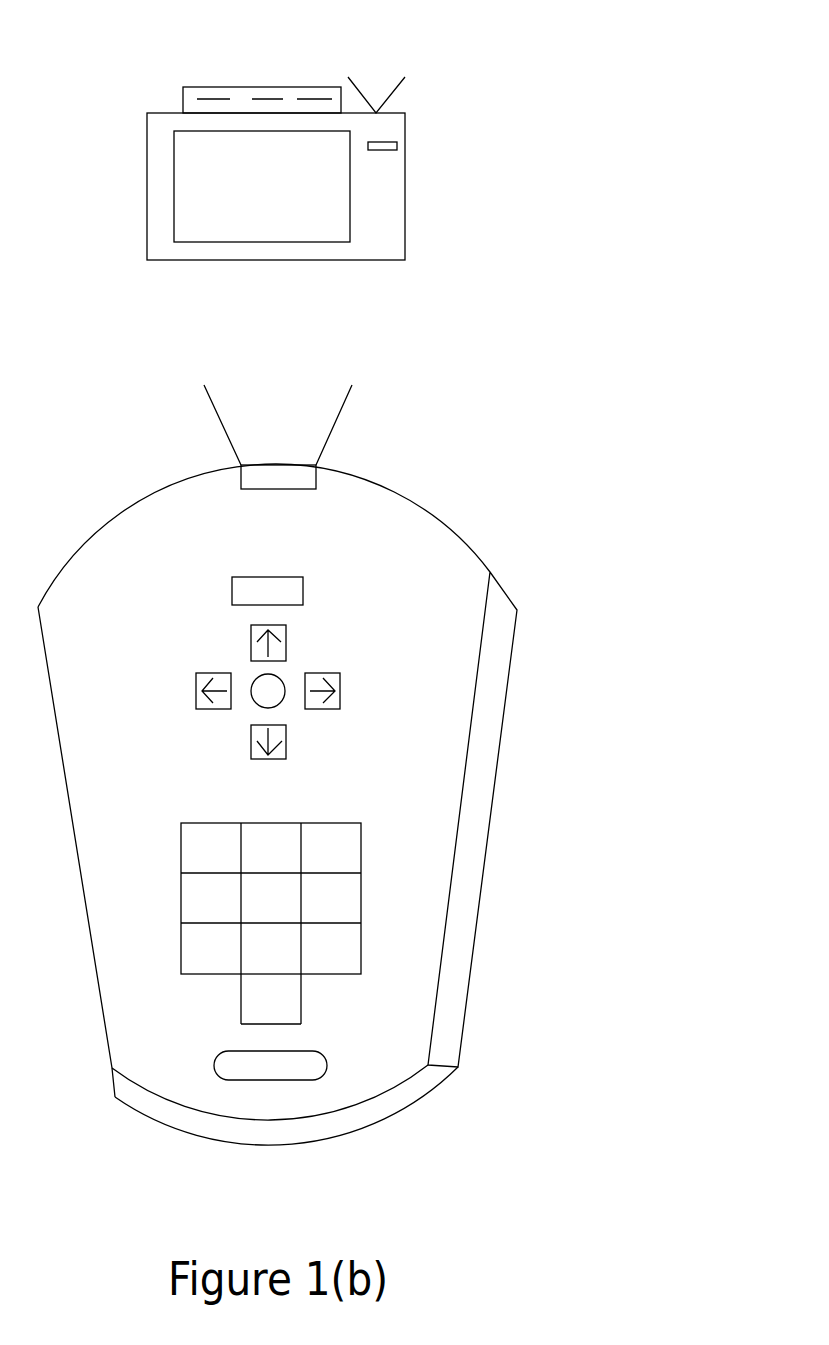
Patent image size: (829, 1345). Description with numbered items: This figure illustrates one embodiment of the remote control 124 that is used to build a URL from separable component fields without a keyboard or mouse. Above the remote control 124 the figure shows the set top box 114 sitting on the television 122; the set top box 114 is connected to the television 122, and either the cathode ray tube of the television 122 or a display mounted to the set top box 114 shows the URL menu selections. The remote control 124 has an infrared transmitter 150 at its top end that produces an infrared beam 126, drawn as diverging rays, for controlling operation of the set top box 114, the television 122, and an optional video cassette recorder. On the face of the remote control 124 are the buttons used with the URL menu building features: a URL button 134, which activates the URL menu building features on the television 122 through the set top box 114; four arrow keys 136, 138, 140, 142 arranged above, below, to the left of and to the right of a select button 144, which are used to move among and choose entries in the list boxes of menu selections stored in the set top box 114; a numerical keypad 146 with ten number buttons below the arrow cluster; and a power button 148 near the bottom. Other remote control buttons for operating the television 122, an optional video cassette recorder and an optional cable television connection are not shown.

The set top box 114 is at (215, 87).
The television 122 is at (407, 182).
The remote control 124 is at (482, 897).
The infrared beam 126 is at (250, 408).
The URL button 134 is at (303, 590).
The arrow key 136 is at (287, 645).
The arrow key 138 is at (287, 738).
The arrow key 140 is at (197, 692).
The arrow key 142 is at (340, 692).
The select button 144 is at (260, 707).
The numerical keypad 146 is at (361, 907).
The power button 148 is at (327, 1067).
The infrared transmitter 150 is at (297, 475).